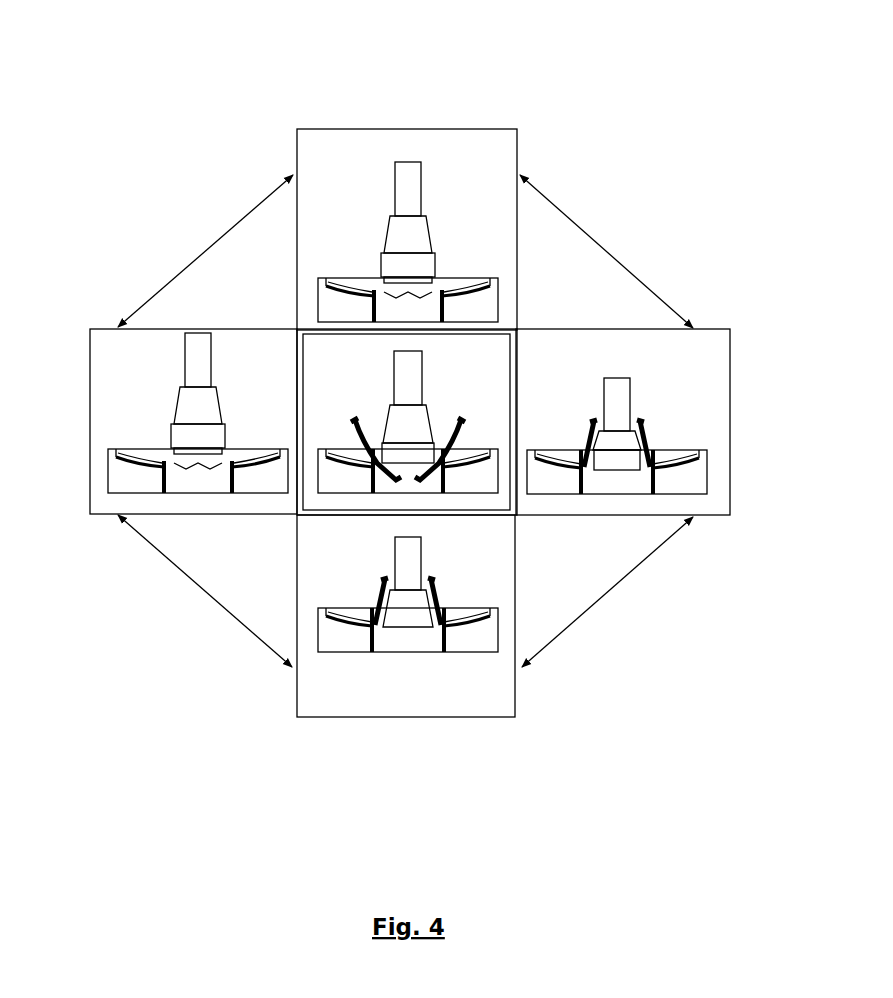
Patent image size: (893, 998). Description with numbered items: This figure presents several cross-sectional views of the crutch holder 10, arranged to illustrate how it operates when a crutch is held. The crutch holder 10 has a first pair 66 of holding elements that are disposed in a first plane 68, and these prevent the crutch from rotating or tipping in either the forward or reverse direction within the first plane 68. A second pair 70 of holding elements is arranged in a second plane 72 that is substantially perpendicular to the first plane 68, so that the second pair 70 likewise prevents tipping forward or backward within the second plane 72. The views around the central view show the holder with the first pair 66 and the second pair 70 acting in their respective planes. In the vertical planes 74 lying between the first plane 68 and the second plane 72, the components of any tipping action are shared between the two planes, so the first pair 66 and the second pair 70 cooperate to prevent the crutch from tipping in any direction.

The crutch holder 10 is at (513, 66).
The first pair of holding elements 66 is at (340, 285).
The first plane 68 is at (520, 147).
The second pair of holding elements 70 is at (125, 448).
The second plane 72 is at (227, 327).
The vertical planes 74 is at (613, 257).